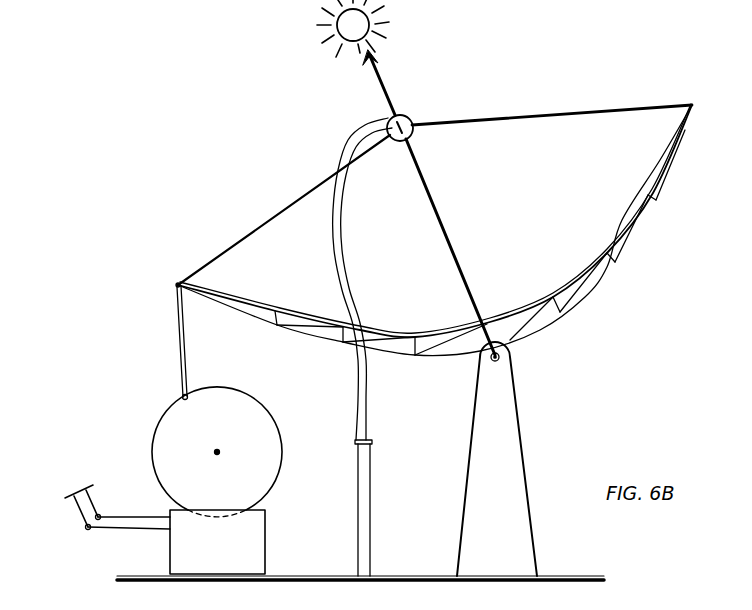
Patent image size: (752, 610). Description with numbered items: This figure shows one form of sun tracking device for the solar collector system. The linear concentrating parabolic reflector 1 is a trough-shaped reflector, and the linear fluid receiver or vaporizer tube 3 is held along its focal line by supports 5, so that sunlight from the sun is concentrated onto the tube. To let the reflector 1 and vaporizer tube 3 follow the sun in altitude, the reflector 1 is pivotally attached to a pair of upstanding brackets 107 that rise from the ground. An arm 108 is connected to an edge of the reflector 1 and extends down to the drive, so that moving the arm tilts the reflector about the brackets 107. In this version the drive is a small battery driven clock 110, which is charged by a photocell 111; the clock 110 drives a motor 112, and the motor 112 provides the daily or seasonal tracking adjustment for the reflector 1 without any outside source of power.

The linear concentrating parabolic reflector 1 is at (647, 186).
The vaporizer tube 3 is at (421, 117).
The supports 5 is at (518, 115).
The upstanding brackets 107 is at (509, 404).
The arm 108 is at (181, 368).
The battery driven clock 110 is at (266, 531).
The photocell 111 is at (75, 492).
The motor 112 is at (278, 463).